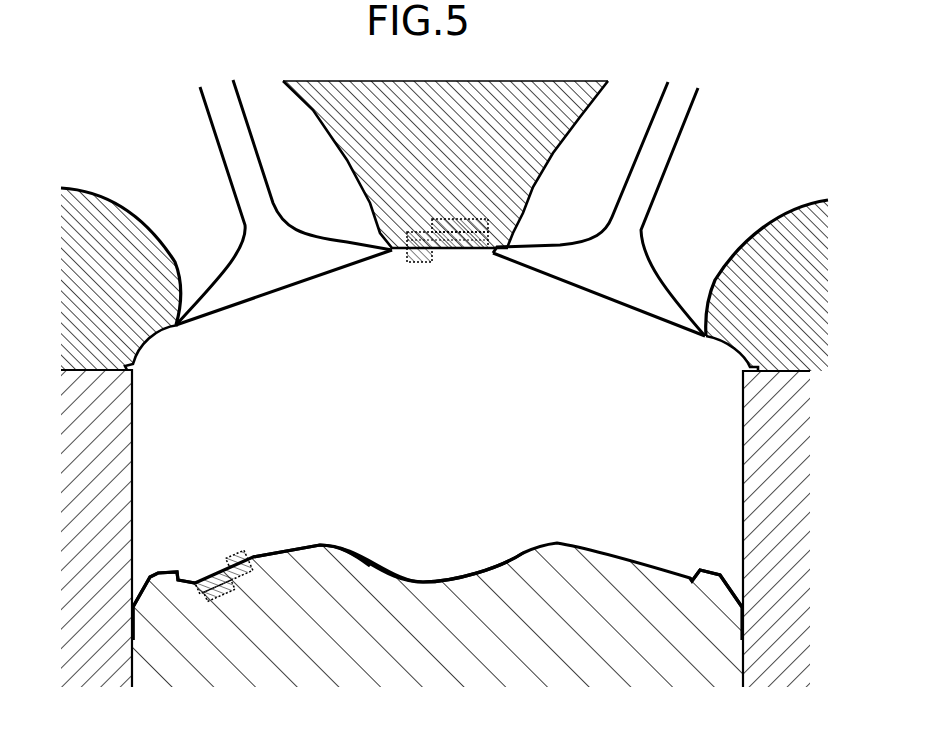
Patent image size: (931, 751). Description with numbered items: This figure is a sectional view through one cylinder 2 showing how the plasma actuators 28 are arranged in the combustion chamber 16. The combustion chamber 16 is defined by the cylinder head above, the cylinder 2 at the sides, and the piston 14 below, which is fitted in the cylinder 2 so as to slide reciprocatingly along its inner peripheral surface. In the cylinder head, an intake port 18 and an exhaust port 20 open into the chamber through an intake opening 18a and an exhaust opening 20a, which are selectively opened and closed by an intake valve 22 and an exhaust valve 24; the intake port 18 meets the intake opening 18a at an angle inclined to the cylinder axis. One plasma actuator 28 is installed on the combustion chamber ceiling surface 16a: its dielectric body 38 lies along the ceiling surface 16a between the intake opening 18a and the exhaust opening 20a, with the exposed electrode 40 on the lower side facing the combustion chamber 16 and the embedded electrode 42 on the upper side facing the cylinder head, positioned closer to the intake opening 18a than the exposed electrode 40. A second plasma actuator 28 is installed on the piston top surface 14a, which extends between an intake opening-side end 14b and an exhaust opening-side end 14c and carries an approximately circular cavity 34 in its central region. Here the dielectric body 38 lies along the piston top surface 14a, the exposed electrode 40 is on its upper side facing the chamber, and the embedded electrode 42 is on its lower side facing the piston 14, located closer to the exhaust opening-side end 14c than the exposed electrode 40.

The cylinder 2 is at (783, 562).
The piston 14 is at (620, 545).
The piston top surface 14a is at (330, 547).
The intake opening-side end 14b is at (723, 573).
The exhaust opening-side end 14c is at (153, 572).
The combustion chamber 16 is at (451, 449).
The combustion chamber ceiling surface 16a is at (488, 253).
The intake port 18 is at (739, 165).
The intake opening 18a is at (635, 321).
The exhaust port 20 is at (166, 182).
The exhaust opening 20a is at (281, 301).
The intake valve 22 is at (660, 298).
The exhaust valve 24 is at (217, 300).
The plasma actuator 28 is at (371, 460).
The cavity 34 is at (461, 572).
The dielectric body 38 is at (467, 240).
The exposed electrode 40 is at (417, 261).
The embedded electrode 42 is at (483, 227).